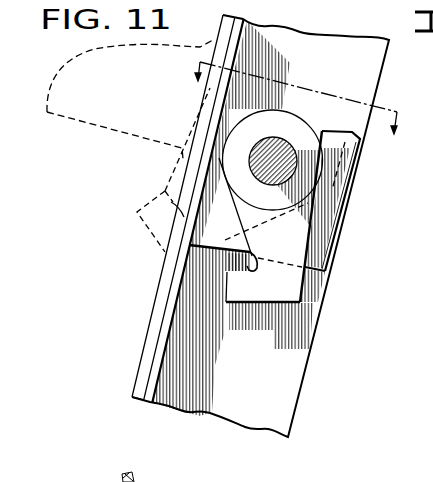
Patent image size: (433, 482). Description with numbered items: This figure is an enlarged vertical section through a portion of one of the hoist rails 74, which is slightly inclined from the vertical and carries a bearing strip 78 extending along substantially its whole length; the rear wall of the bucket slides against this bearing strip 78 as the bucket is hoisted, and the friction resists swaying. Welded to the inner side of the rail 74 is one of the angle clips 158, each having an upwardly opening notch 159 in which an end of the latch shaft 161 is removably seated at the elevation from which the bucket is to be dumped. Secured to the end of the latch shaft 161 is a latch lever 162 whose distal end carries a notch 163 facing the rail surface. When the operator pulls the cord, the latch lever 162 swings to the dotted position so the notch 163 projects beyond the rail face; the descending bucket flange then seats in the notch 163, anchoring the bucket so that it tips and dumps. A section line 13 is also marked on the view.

The section line 13- 13 is at (301, 91).
The inclined rail 74 is at (283, 383).
The bearing strip 78 is at (156, 323).
The angle clip 158 is at (318, 254).
The notch 159 is at (323, 130).
The latch shaft 161 is at (262, 168).
The latch lever 162 is at (275, 289).
The notch 163 is at (254, 254).